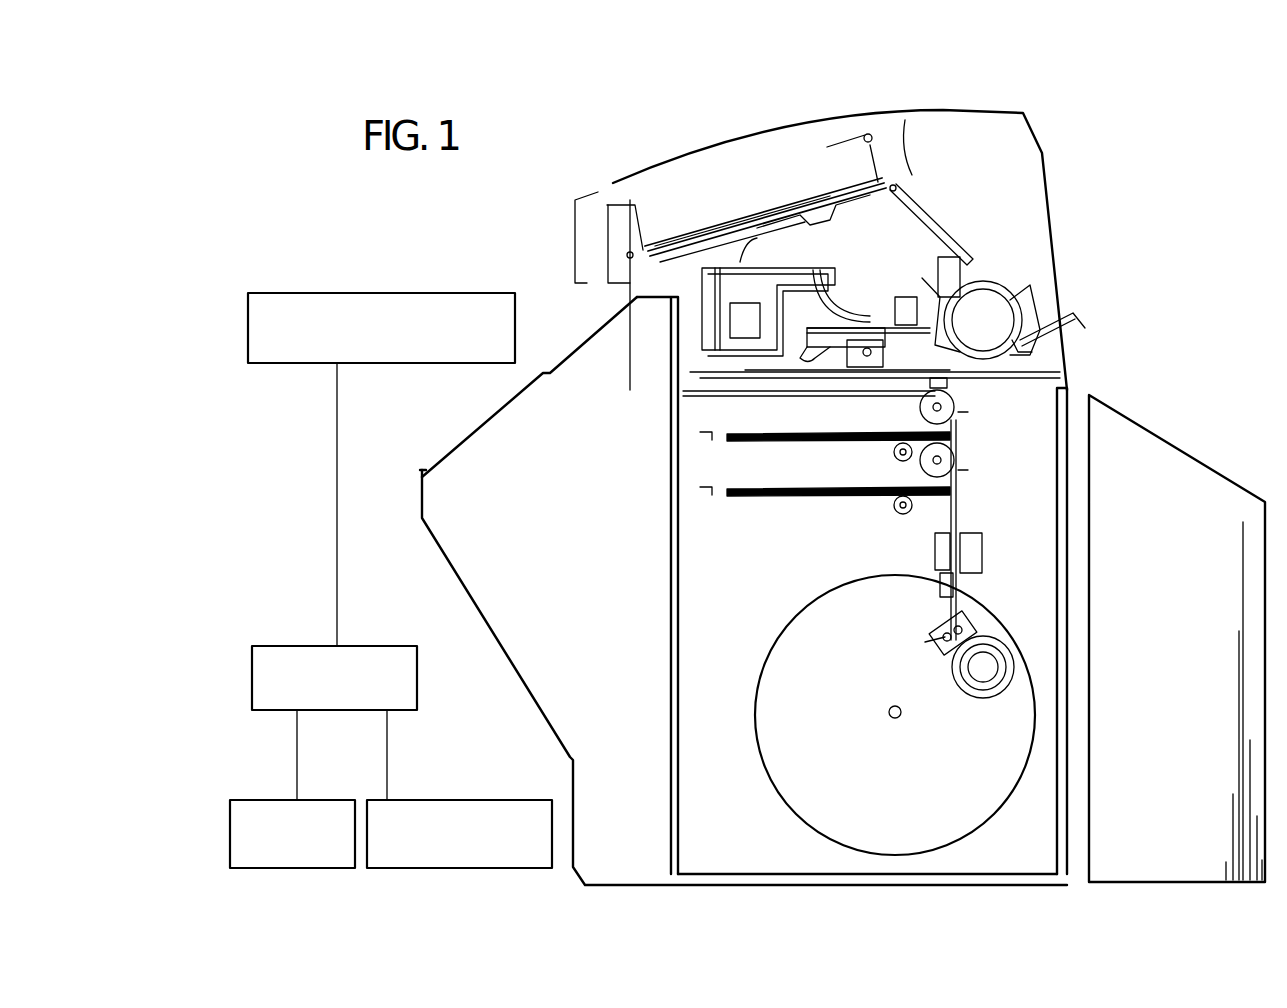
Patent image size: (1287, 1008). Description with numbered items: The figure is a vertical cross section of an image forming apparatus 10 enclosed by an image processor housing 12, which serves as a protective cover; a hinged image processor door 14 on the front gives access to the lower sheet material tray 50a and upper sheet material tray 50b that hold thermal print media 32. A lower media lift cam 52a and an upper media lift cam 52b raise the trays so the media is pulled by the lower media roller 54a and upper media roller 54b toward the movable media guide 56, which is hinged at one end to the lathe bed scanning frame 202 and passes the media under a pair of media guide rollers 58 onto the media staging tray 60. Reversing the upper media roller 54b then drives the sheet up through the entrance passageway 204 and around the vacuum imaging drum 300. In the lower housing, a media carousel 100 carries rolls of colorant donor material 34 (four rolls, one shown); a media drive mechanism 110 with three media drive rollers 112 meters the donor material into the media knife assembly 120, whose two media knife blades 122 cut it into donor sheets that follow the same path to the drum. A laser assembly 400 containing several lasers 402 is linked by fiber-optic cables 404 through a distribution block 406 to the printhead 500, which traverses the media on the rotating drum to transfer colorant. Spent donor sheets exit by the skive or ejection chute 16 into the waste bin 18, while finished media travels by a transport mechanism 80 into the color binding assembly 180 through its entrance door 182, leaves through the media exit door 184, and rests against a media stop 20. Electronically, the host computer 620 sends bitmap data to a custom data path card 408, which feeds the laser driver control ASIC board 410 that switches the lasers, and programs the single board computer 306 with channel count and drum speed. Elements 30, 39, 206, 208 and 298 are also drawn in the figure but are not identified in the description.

The image forming apparatus 10 is at (861, 49).
The image processor housing 12 is at (643, 168).
The image processor door 14 is at (524, 700).
The skive or ejection chute 16 is at (1076, 318).
The waste bin 18 is at (1152, 432).
The media stop 20 is at (425, 478).
The roller 30 is at (1014, 670).
The thermal print media 32 is at (808, 434).
The colorant donor material 34 is at (983, 673).
The sensor 39 is at (985, 535).
The lower sheet material tray 50a is at (705, 488).
The upper sheet material tray 50b is at (705, 433).
The lower media lift cam 52a is at (893, 510).
The upper media lift cam 52b is at (898, 463).
The lower media roller 54a is at (958, 495).
The upper media roller 54b is at (958, 452).
The media guide 56 is at (958, 405).
The media guide rollers 58 is at (900, 432).
The media staging tray 60 is at (690, 385).
The transport mechanism 80 is at (948, 226).
The media carousel 100 is at (776, 792).
The media drive mechanism 110 is at (1010, 632).
The media drive rollers 112 is at (935, 627).
The media knife assembly 120 is at (985, 558).
The media knife blades 122 is at (968, 585).
The color binding assembly 180 is at (830, 190).
The entrance door 182 is at (870, 133).
The media exit door 184 is at (655, 196).
The lathe bed scanning frame 202 is at (945, 345).
The entrance passageway 204 is at (1068, 388).
The platen 206 is at (738, 385).
The platen support 208 is at (877, 386).
The plate 298 is at (952, 248).
The vacuum imaging drum 300 is at (992, 318).
The single board computer 306 is at (480, 800).
The laser assembly 400 is at (712, 265).
The lasers 402 is at (717, 328).
The fiber-optic cables 404 is at (745, 265).
The distribution block 406 is at (918, 200).
The custom data path card 408 is at (306, 645).
The laser driver control ASIC board 410 is at (337, 292).
The printhead 500 is at (930, 236).
The host computer 620 is at (268, 800).